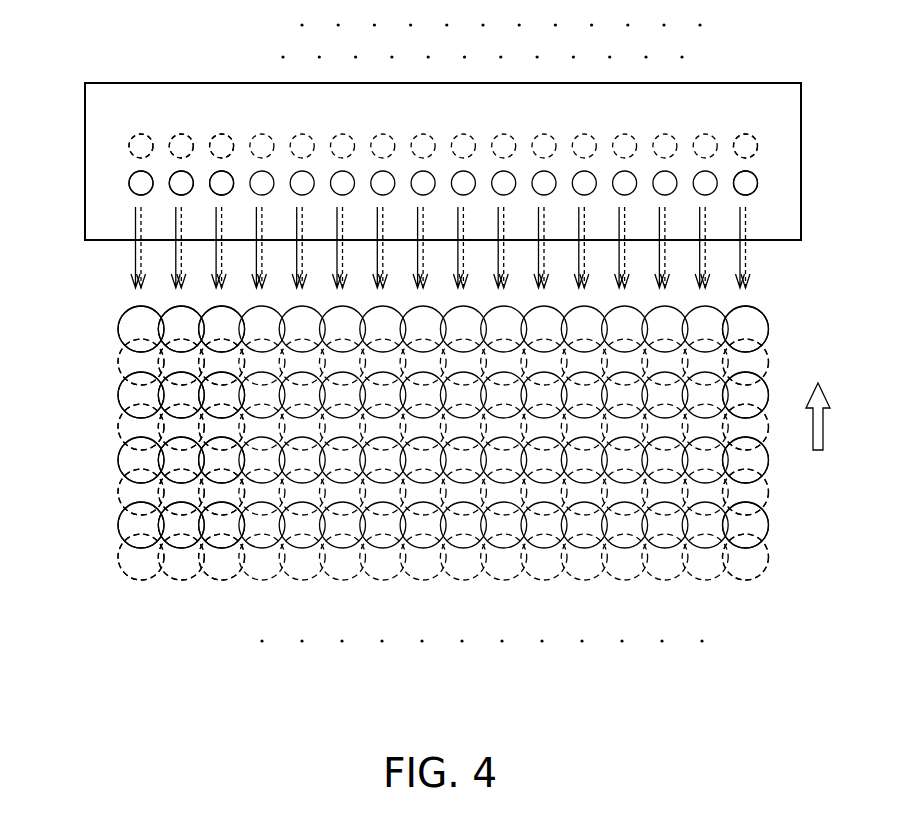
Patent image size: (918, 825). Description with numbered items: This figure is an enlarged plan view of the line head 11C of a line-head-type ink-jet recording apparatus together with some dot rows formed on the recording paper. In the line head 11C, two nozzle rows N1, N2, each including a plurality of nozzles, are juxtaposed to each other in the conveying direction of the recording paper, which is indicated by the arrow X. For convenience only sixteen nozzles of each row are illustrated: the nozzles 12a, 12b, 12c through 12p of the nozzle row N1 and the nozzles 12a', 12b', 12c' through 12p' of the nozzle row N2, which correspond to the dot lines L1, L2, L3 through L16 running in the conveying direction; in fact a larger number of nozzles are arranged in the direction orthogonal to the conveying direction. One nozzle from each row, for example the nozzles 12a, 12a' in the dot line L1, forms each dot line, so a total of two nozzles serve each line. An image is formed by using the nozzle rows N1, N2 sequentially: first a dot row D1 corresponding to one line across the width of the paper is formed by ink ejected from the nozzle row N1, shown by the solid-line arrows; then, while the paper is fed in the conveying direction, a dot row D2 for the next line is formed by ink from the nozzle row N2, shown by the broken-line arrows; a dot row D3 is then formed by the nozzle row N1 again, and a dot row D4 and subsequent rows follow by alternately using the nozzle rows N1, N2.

The line head 11C is at (785, 201).
The nozzle row N1 is at (100, 187).
The nozzle row N2 is at (100, 150).
The nozzle 12a is at (118, 121).
The nozzle 12b is at (174, 121).
The nozzle 12c is at (225, 121).
The nozzle 12p is at (729, 121).
The nozzle 12a' is at (139, 85).
The nozzle 12b' is at (200, 85).
The nozzle 12c' is at (247, 85).
The nozzle 12p' is at (750, 85).
The dot row D1 is at (99, 333).
The dot row D2 is at (99, 366).
The dot row D3 is at (99, 399).
The dot row D4 is at (99, 431).
The dot line L1 is at (144, 606).
The dot line L2 is at (185, 606).
The dot line L3 is at (226, 606).
The dot line L16 is at (749, 606).
The arrow indicating conveying direction X is at (818, 403).